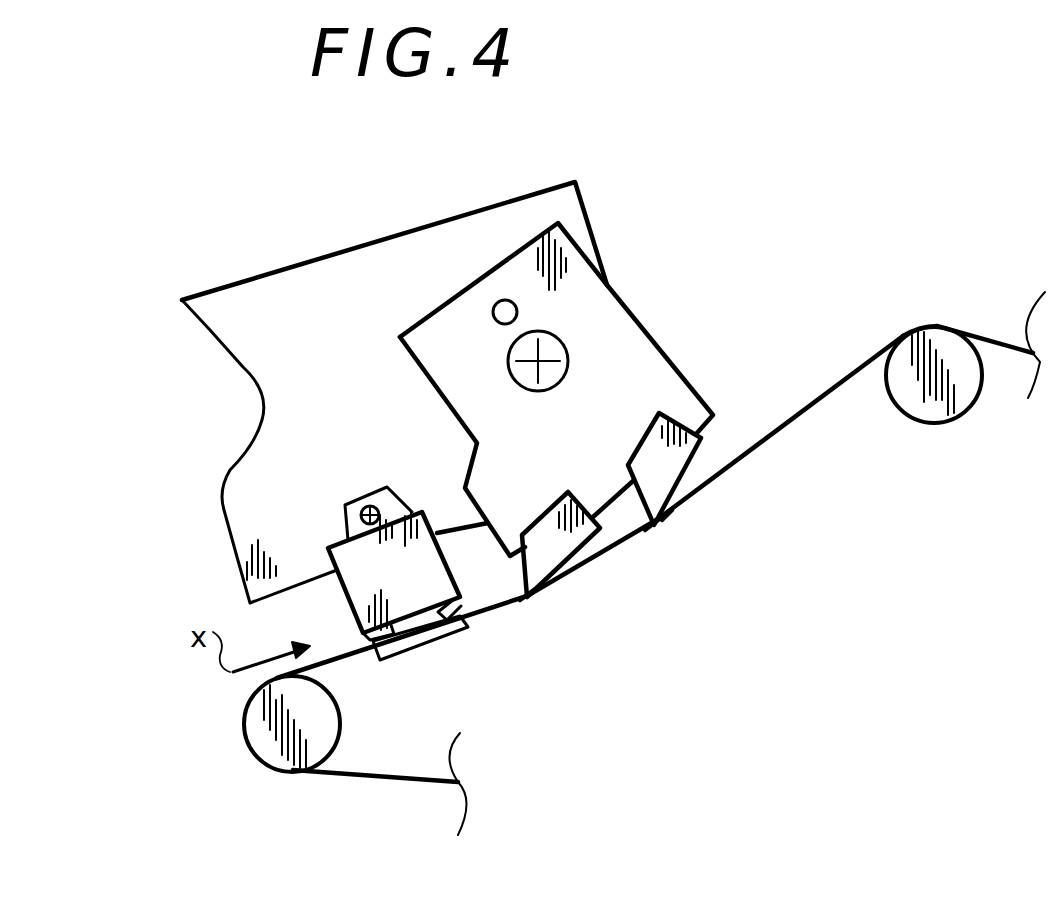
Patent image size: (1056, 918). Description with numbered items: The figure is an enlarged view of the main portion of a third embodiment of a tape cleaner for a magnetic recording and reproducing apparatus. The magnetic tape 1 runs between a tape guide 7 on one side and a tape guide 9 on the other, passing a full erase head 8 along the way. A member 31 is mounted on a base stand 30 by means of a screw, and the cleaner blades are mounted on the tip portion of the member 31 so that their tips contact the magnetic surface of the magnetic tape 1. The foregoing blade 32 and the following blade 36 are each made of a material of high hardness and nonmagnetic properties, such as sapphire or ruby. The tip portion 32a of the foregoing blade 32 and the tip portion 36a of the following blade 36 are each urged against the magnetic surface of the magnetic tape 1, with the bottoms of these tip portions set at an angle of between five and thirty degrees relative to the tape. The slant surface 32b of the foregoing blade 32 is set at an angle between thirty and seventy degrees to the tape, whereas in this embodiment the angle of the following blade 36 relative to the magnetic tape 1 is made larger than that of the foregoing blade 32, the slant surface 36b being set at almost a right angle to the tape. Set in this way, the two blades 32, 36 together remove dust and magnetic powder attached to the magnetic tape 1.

The magnetic tape 1 is at (333, 773).
The tape guide 7 is at (260, 763).
The full erase head 8 is at (351, 604).
The tape guide 9 is at (942, 422).
The base stand 30 is at (208, 332).
The member 31 is at (398, 340).
The foregoing blade 32 is at (551, 506).
The tip portion of the foregoing blade 32a is at (525, 598).
The slant surface of the foregoing blade 32b is at (517, 560).
The following blade 36 is at (652, 450).
The tip portion of the following blade 36a is at (667, 516).
The slant surface of the following blade 36b is at (640, 505).